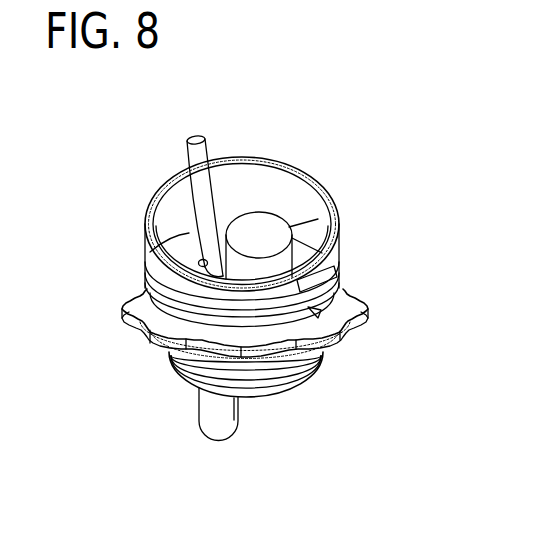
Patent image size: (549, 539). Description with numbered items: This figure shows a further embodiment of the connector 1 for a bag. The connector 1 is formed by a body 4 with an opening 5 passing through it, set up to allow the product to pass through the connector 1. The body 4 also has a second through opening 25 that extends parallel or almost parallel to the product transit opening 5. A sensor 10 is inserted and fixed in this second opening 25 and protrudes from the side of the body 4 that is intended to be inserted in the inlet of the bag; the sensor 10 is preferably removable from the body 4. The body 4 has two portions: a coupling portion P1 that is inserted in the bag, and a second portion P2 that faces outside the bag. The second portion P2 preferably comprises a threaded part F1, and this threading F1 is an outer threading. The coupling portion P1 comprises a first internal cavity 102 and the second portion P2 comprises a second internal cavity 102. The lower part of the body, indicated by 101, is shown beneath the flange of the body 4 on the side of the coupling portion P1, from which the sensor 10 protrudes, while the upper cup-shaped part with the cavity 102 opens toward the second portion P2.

The connector 1 is at (372, 222).
The body 4 is at (366, 318).
The opening 5 is at (264, 230).
The sensor 10 is at (191, 200).
The second through opening 25 is at (199, 251).
The lower portion 101 is at (253, 405).
The internal cavity 102 is at (226, 184).
The coupling portion P1 is at (296, 392).
The second portion P2 is at (330, 191).
The threaded part F1 is at (454, 527).